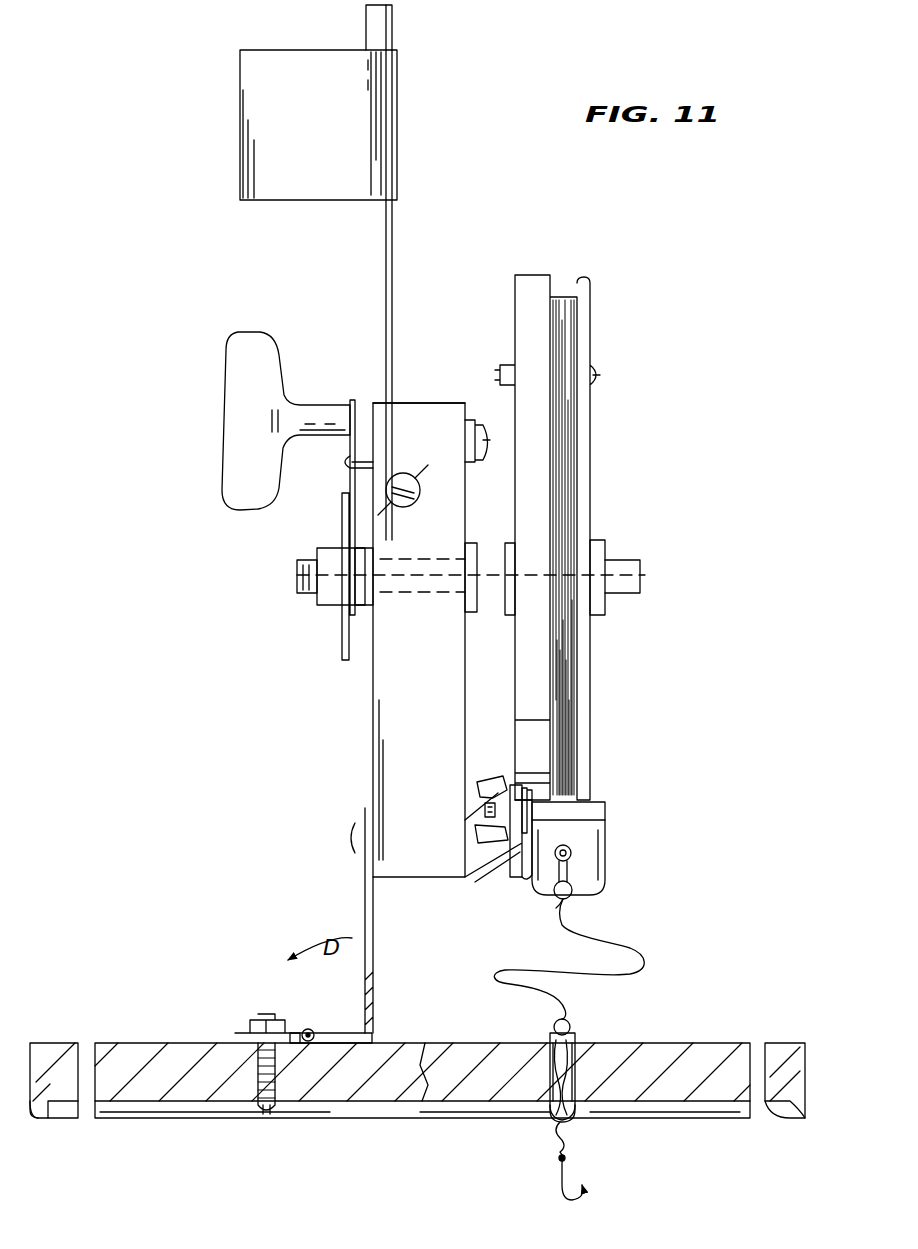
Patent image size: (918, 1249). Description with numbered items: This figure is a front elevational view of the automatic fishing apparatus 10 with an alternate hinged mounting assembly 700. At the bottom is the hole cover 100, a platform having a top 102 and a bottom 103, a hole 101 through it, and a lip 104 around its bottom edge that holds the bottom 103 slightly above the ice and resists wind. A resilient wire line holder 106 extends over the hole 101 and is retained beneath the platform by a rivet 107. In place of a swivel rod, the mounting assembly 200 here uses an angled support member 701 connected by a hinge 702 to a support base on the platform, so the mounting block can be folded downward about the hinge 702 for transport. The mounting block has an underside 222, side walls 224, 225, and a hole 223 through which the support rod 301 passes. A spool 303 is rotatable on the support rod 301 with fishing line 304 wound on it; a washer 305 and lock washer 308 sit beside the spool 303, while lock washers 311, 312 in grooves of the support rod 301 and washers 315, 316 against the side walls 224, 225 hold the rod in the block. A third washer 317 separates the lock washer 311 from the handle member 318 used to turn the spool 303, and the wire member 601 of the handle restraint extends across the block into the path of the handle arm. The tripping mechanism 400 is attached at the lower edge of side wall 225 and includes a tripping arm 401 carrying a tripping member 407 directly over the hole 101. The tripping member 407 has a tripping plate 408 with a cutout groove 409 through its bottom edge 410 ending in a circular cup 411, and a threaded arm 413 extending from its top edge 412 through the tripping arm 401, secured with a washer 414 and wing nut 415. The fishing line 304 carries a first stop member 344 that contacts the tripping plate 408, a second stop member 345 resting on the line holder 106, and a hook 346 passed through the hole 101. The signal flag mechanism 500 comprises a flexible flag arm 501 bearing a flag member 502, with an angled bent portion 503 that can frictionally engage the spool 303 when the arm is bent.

The automatic fishing apparatus 10 is at (780, 336).
The hole cover 100 is at (765, 1002).
The hole 101 is at (575, 1086).
The top 102 is at (662, 1040).
The bottom 103 is at (655, 1115).
The lip 104 is at (40, 1118).
The line holder 106 is at (628, 1015).
The rivet 107 is at (545, 1112).
The mounting assembly 200 is at (318, 741).
The underside 222 is at (420, 880).
The hole 223 is at (410, 598).
The side wall 224 is at (376, 404).
The side wall 225 is at (470, 410).
The support rod 301 is at (642, 585).
The spool 303 is at (594, 306).
The fishing line 304 is at (536, 968).
The washer 305 is at (592, 545).
The lock washer 308 is at (606, 545).
The lock washer 311 is at (360, 553).
The lock washer 312 is at (470, 548).
The washer 315 is at (360, 615).
The washer 316 is at (465, 553).
The washer 317 is at (355, 593).
The handle member 318 is at (226, 365).
The stop member 344 is at (570, 880).
The stop member 345 is at (554, 1024).
The hook 346 is at (555, 1164).
The tripping mechanism 400 is at (490, 882).
The tripping arm 401 is at (466, 852).
The tripping member 407 is at (606, 782).
The tripping plate 408 is at (594, 806).
The cutout groove 409 is at (568, 896).
The bottom edge 410 is at (574, 888).
The circular cup 411 is at (567, 845).
The top edge 412 is at (606, 802).
The threaded arm 413 is at (485, 808).
The washer 414 is at (510, 770).
The wing nut 415 is at (510, 790).
The signal flag mechanism 500 is at (408, 185).
The flag arm 501 is at (395, 206).
The flag member 502 is at (250, 135).
The angled bent portion 503 is at (372, 14).
The wire member 601 is at (345, 462).
The mounting assembly 700 is at (383, 1016).
The angled support member 701 is at (363, 905).
The hinge 702 is at (312, 1028).